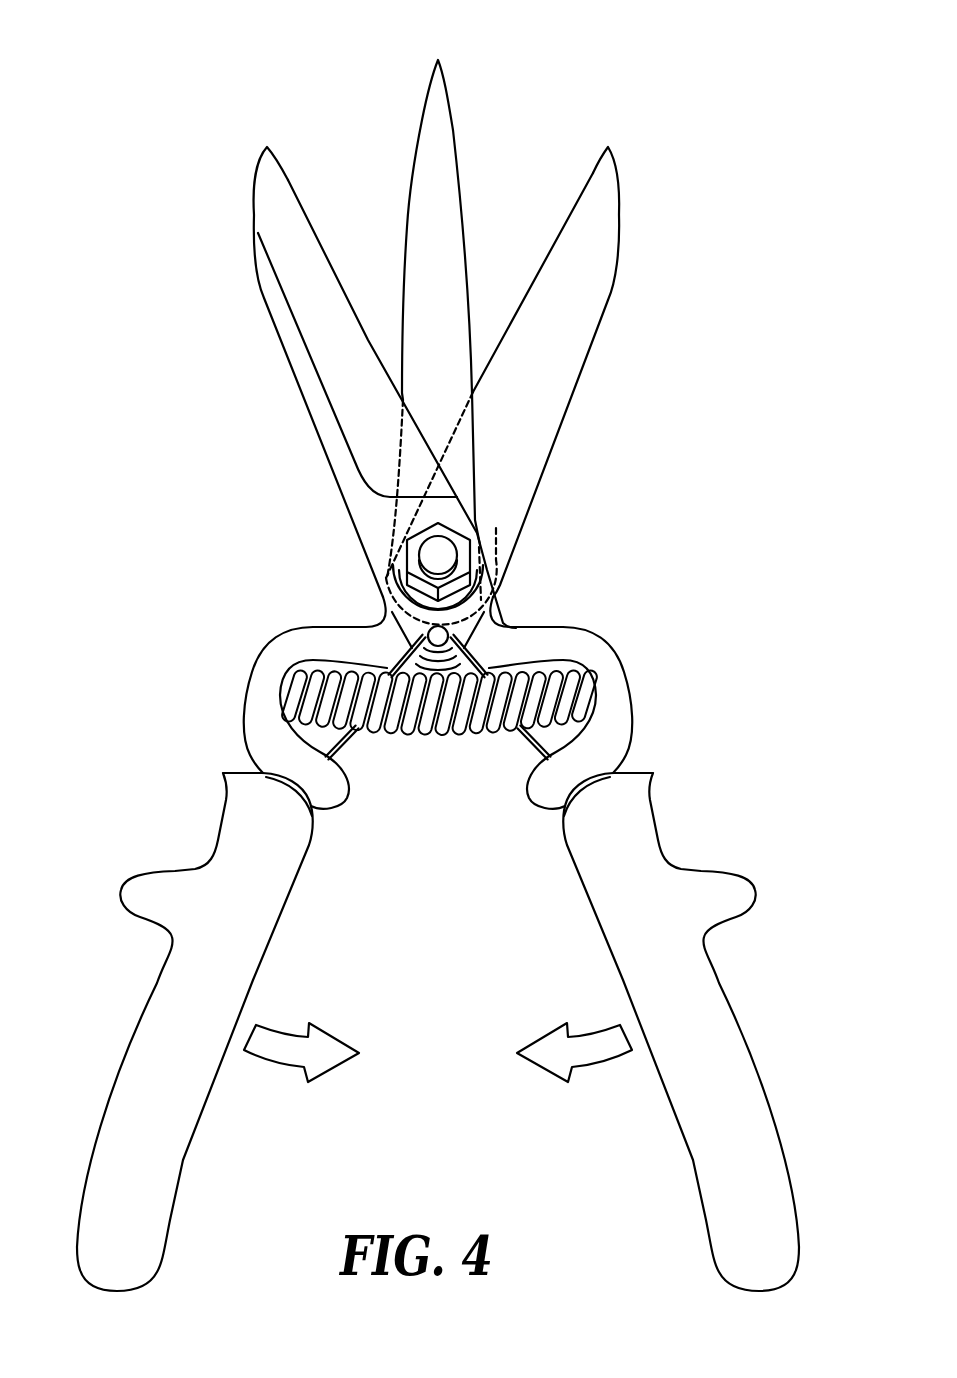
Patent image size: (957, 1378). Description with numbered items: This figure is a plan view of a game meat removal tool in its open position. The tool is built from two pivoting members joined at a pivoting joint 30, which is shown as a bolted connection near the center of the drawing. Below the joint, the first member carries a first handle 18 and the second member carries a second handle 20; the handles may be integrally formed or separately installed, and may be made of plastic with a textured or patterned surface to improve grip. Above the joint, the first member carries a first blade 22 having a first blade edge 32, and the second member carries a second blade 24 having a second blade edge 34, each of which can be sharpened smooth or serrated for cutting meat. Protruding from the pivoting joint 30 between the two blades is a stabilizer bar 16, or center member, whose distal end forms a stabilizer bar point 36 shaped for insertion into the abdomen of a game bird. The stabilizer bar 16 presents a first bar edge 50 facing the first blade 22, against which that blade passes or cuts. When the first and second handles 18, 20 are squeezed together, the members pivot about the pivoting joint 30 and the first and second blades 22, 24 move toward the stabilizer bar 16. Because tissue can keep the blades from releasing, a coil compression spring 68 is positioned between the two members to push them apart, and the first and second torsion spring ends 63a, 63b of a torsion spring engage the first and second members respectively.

The stabilizer bar 16 is at (462, 300).
The first handle 18 is at (120, 1060).
The second handle 20 is at (758, 1060).
The first blade 22 is at (538, 341).
The second blade 24 is at (363, 352).
The pivoting joint 30 is at (483, 543).
The first blade edge 32 is at (595, 175).
The second blade edge 34 is at (285, 177).
The stabilizer bar point 36 is at (439, 58).
The first bar edge 50 is at (476, 246).
The first torsion spring end 63a is at (358, 735).
The second torsion spring end 63b is at (522, 738).
The compression spring 68 is at (437, 735).